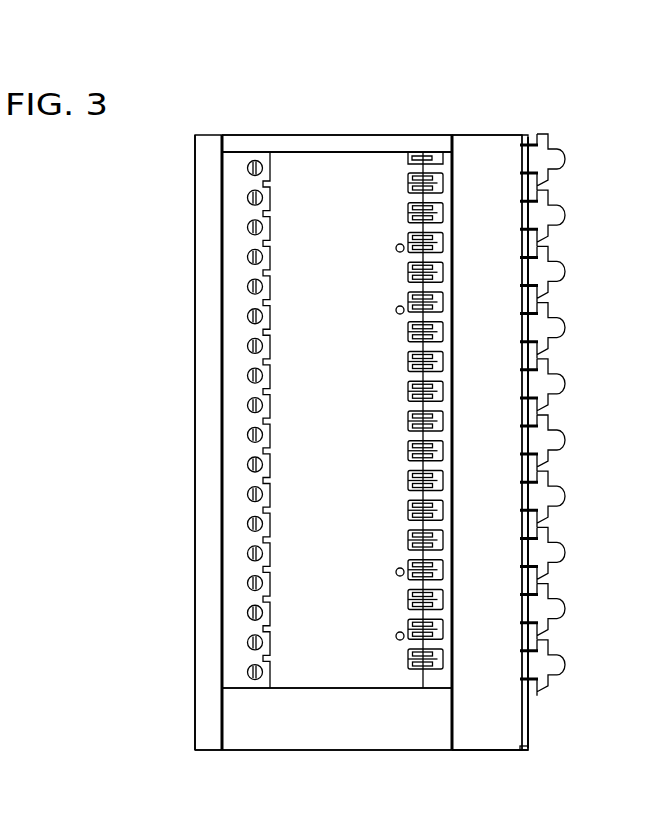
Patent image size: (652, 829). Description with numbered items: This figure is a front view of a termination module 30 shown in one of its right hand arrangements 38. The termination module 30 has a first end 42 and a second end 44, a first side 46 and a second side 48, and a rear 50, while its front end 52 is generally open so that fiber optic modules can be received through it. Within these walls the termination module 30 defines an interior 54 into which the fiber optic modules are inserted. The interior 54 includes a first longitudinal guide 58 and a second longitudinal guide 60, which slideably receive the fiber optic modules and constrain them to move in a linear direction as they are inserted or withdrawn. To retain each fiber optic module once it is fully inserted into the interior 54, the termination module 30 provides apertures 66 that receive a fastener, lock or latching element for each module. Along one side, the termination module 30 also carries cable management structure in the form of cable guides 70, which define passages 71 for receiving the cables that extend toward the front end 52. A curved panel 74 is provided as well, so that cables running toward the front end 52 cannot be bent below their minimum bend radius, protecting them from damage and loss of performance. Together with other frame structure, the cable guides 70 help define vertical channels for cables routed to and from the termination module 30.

The termination module 30 is at (269, 110).
The right hand arrangement 38 is at (485, 134).
The first end 42 is at (330, 133).
The second end 44 is at (398, 752).
The first side 46 is at (196, 466).
The second side 48 is at (527, 713).
The rear 50 is at (357, 550).
The front end 52 is at (366, 150).
The interior 54 is at (357, 412).
The first longitudinal guide 58 is at (264, 659).
The second longitudinal guide 60 is at (410, 455).
The apertures 66 is at (258, 680).
The cable guides 70 is at (565, 160).
The passages 71 is at (555, 185).
The curved panel 74 is at (488, 472).